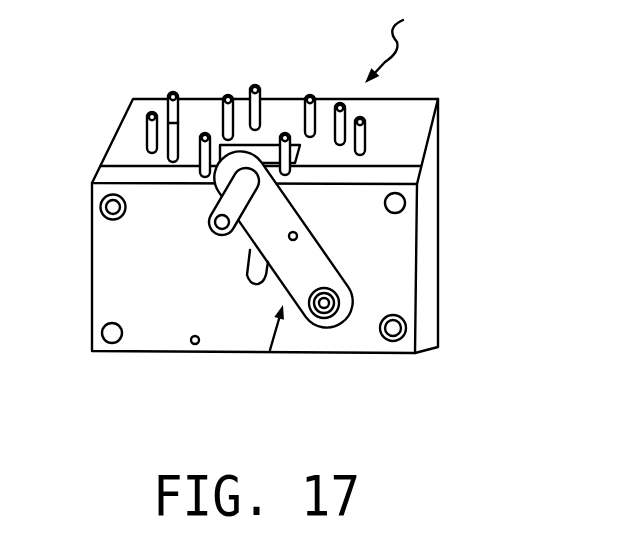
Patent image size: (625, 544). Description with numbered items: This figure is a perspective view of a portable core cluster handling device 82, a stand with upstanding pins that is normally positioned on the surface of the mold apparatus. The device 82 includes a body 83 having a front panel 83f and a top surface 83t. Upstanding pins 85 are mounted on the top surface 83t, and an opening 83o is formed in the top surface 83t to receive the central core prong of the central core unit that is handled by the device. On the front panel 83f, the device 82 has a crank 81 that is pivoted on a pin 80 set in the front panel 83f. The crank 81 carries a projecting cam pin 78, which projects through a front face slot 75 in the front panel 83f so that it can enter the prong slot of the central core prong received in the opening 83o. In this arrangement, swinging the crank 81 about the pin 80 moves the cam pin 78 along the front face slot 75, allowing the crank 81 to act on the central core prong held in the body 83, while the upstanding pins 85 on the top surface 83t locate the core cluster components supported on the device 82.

The front face slot 75 is at (247, 272).
The projecting cam pin 78 is at (298, 236).
The pin 80 is at (327, 317).
The crank 81 is at (270, 350).
The portable core cluster handling device 82 is at (403, 44).
The body 83 is at (274, 216).
The top surface 83t is at (118, 128).
The opening 83o is at (262, 135).
The front panel 83f is at (180, 285).
The upstanding pins 85 is at (368, 133).